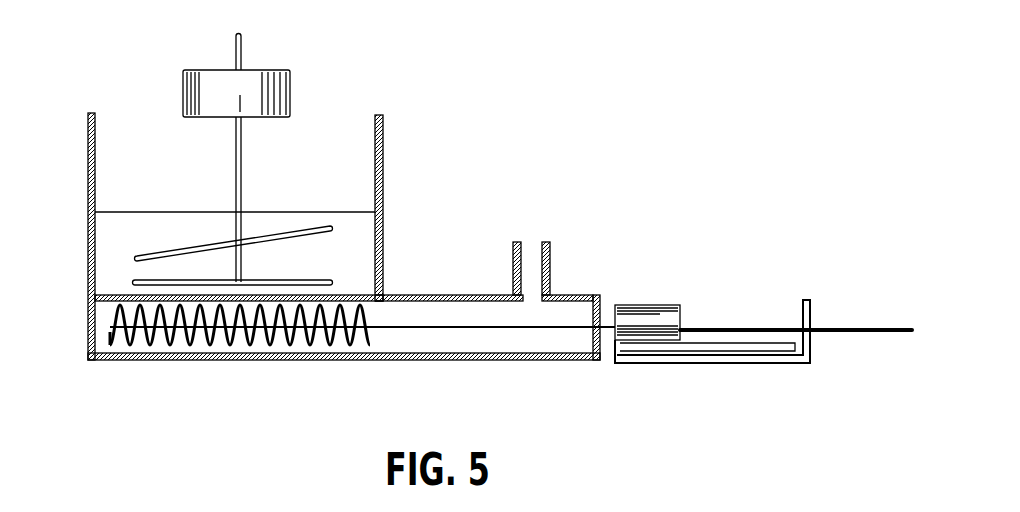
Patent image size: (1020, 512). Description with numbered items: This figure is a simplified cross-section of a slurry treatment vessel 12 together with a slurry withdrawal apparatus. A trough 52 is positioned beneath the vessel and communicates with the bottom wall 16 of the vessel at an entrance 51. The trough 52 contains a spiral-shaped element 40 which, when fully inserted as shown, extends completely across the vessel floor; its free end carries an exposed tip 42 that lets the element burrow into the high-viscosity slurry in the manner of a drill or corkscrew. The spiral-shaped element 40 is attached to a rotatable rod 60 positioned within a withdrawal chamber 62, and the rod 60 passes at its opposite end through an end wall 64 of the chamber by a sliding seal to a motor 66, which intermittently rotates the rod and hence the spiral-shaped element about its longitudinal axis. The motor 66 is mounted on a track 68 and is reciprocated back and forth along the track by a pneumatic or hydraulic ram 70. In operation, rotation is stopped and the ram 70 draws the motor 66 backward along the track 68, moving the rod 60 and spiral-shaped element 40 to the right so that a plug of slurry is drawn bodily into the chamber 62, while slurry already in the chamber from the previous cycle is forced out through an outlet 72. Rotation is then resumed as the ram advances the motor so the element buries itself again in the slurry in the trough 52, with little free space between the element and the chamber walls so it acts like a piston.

The vessel 12 is at (383, 125).
The bottom wall 16 is at (352, 297).
The spiral-shaped element 40 is at (227, 330).
The exposed tip 42 is at (116, 340).
The entrance 51 is at (343, 297).
The trough 52 is at (100, 312).
The rotatable rod 60 is at (478, 330).
The withdrawal chamber 62 is at (422, 345).
The end wall 64 is at (590, 338).
The motor 66 is at (643, 312).
The track 68 is at (697, 363).
The ram 70 is at (828, 327).
The outlet 72 is at (547, 270).